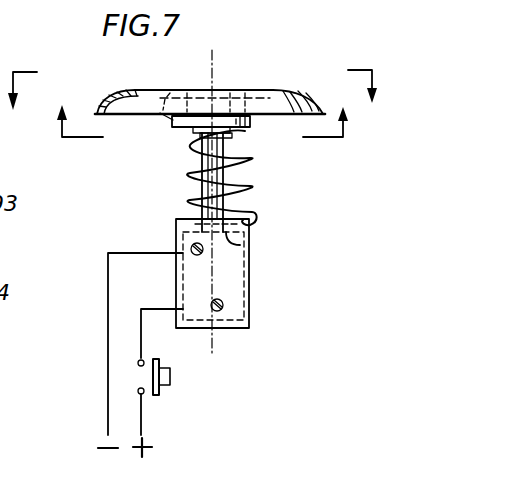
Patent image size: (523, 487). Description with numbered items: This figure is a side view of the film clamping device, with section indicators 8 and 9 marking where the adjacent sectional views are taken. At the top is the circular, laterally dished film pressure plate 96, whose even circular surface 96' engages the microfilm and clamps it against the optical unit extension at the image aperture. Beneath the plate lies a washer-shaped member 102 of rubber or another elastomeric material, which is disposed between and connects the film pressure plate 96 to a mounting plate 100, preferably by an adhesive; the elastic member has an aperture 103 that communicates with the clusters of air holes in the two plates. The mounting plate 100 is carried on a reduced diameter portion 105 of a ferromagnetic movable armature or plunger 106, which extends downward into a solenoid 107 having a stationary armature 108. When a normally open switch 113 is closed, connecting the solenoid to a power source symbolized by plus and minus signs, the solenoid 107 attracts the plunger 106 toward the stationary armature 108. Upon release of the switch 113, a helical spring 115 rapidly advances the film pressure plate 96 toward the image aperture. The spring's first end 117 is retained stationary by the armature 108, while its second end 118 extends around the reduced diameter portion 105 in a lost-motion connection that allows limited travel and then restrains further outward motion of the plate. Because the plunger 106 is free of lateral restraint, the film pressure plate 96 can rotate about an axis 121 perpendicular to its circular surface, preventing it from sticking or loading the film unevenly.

The section line 8- 8 is at (195, 114).
The section line 9- 9 is at (202, 100).
The film pressure plate 96 is at (215, 70).
The even circular surface 96' is at (202, 65).
The mounting plate 100 is at (175, 128).
The washer-shaped member 102 is at (175, 118).
The aperture 103 is at (205, 90).
The reduced diameter portion 105 is at (240, 135).
The movable armature or plunger 106 is at (230, 168).
The solenoid 107 is at (248, 298).
The stationary armature 108 is at (235, 329).
The normally open switch 113 is at (168, 386).
The helical spring 115 is at (245, 200).
The first end 117 is at (240, 243).
The second end 118 is at (206, 130).
The axis 121 is at (216, 70).